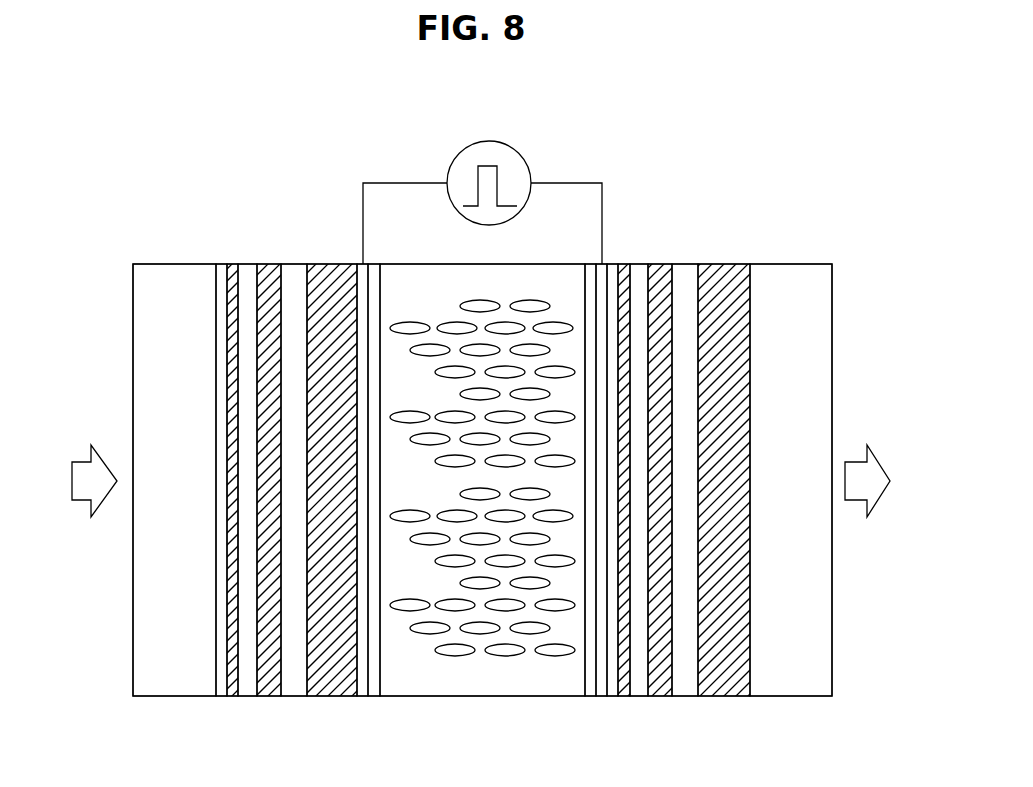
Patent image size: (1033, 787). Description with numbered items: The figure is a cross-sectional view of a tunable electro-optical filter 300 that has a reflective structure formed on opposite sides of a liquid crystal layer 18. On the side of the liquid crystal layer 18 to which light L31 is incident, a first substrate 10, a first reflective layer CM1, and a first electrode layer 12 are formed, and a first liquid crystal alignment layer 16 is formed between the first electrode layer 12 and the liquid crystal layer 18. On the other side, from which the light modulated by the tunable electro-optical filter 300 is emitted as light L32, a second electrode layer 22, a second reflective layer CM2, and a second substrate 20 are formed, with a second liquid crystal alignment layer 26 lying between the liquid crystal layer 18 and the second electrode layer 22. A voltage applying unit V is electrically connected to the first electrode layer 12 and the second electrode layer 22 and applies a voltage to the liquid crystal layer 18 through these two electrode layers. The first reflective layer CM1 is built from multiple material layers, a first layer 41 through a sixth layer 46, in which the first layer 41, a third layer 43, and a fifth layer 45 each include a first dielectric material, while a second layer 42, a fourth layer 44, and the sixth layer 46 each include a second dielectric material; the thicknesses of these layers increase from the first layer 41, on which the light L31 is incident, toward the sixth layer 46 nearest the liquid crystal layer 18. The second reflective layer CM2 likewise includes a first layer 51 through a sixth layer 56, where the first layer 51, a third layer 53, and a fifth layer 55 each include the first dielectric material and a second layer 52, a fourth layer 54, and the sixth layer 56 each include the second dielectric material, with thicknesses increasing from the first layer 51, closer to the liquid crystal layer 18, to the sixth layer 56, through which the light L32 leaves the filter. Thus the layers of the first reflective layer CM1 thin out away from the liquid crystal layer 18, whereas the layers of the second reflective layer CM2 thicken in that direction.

The tunable electro-optical filter 300 is at (797, 218).
The first substrate 10 is at (181, 687).
The second substrate 20 is at (797, 688).
The first electrode layer 12 is at (360, 690).
The first liquid crystal alignment layer 16 is at (378, 690).
The liquid crystal layer 18 is at (477, 685).
The second liquid crystal alignment layer 26 is at (585, 690).
The second electrode layer 22 is at (601, 690).
The first layer 41 is at (221, 267).
The second layer 42 is at (233, 267).
The third layer 43 is at (250, 270).
The fourth layer 44 is at (268, 267).
The fifth layer 45 is at (297, 275).
The sixth layer 46 is at (332, 270).
The first layer 51 is at (615, 267).
The second layer 52 is at (627, 268).
The third layer 53 is at (642, 273).
The fourth layer 54 is at (665, 270).
The fifth layer 55 is at (692, 275).
The sixth layer 56 is at (728, 272).
The first reflective layer CM1 is at (363, 702).
The second reflective layer CM2 is at (753, 702).
The voltage applying unit V is at (489, 141).
The light L31 is at (71, 481).
The light L32 is at (889, 481).